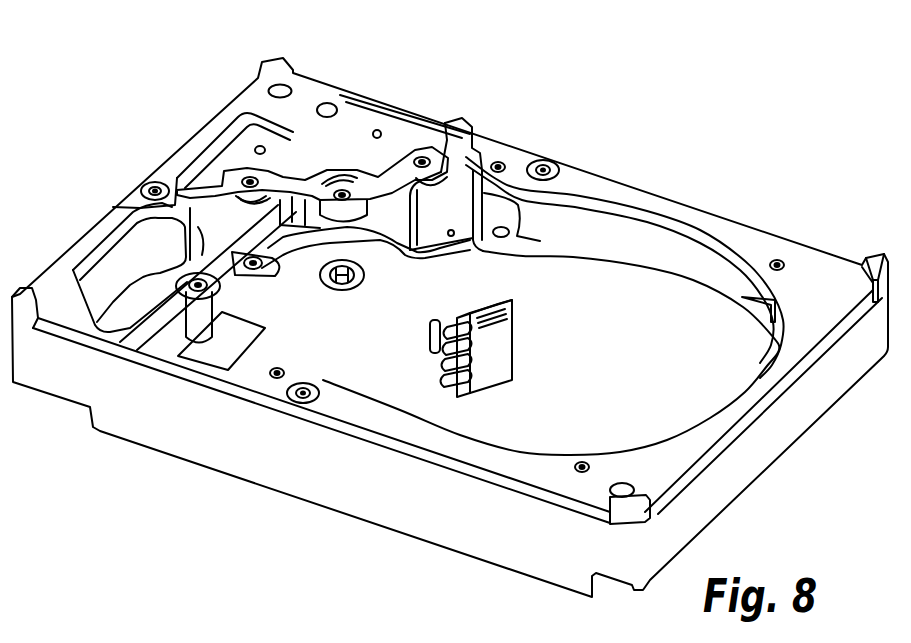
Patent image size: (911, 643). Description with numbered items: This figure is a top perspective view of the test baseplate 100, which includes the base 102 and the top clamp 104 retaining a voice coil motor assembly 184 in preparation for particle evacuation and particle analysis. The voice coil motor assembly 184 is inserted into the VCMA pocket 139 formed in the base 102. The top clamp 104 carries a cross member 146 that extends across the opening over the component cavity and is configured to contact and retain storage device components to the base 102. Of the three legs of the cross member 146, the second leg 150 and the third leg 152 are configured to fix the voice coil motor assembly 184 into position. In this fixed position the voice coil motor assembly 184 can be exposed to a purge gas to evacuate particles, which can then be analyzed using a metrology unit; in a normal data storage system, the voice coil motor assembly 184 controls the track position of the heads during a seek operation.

The test baseplate 100 is at (604, 161).
The base 102 is at (700, 510).
The top clamp 104 is at (370, 95).
The VCMA pocket 139 is at (223, 150).
The cross member 146 is at (236, 263).
The second leg 150 is at (197, 182).
The third leg 152 is at (450, 130).
The voice coil motor assembly 184 is at (300, 140).